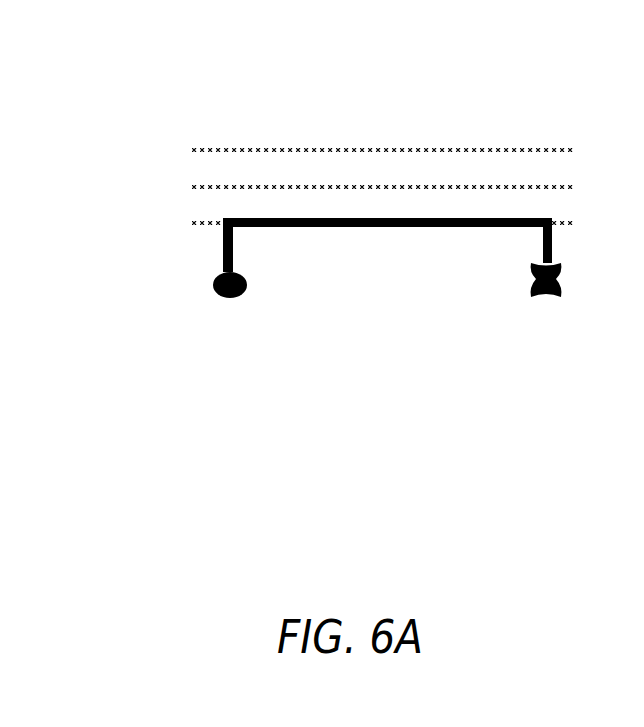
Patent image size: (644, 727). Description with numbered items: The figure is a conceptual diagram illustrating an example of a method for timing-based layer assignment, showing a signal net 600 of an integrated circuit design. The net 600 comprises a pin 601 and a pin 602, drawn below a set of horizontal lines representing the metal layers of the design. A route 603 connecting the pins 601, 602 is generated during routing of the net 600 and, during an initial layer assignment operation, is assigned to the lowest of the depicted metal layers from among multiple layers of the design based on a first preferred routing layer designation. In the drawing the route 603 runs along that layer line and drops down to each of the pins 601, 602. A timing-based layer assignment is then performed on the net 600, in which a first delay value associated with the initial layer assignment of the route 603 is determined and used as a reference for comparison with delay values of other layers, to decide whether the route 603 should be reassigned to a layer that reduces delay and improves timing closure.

The signal net 600 is at (130, 76).
The pin 601 is at (232, 296).
The pin 602 is at (557, 288).
The route 603 is at (373, 227).